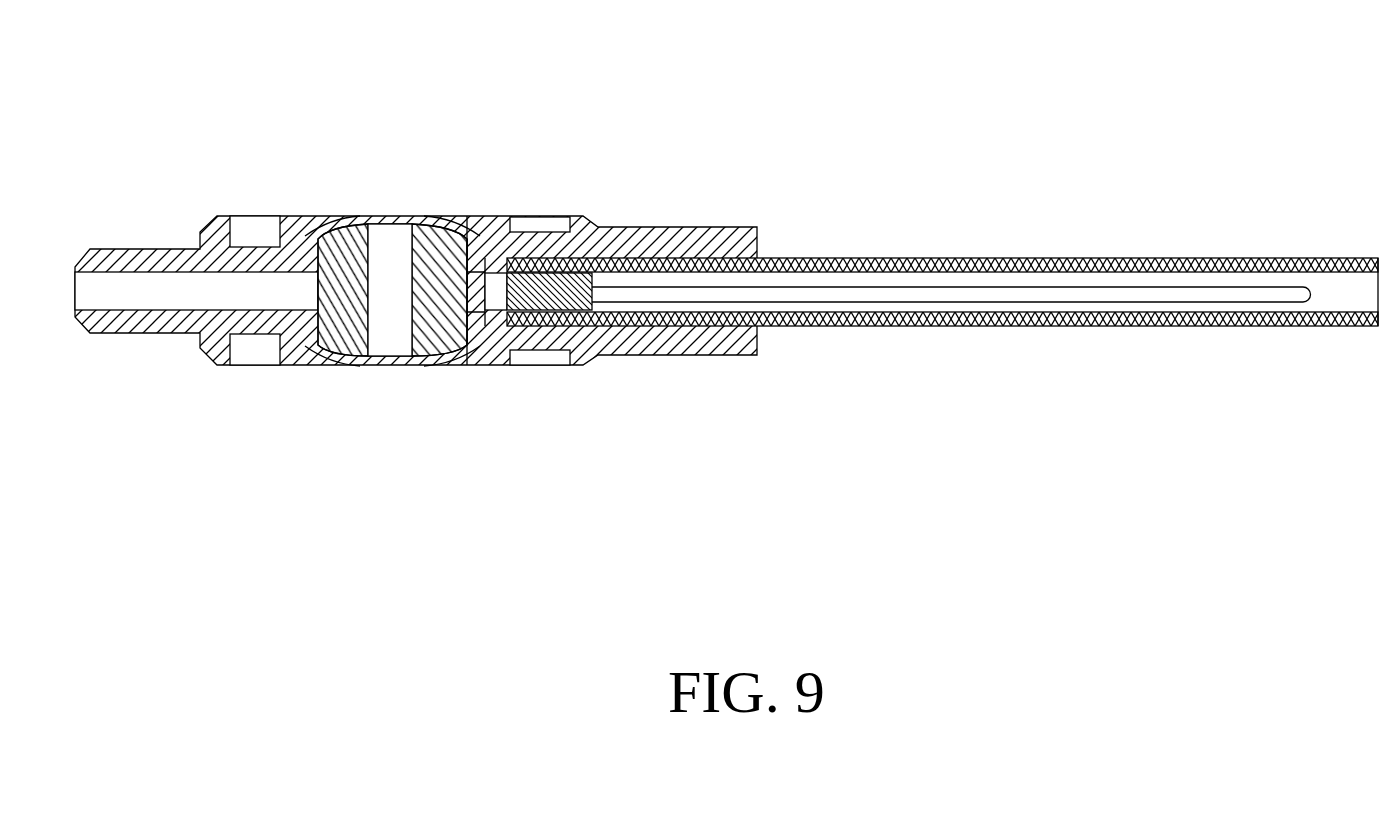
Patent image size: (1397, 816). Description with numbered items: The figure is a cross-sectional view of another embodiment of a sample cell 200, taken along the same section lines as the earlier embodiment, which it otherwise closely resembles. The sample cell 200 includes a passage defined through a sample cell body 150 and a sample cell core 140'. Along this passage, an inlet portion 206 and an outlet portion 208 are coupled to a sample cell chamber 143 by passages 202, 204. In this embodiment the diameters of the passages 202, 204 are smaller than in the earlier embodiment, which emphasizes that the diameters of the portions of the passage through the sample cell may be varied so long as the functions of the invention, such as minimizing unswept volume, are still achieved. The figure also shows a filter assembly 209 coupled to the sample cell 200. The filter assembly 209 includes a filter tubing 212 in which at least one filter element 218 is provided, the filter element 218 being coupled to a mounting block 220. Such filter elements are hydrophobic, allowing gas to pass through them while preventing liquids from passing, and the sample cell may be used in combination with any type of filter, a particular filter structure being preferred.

The sample cell 200 is at (187, 141).
The filter assembly 209 is at (942, 234).
The sample cell chamber 143 is at (393, 274).
The passage 202 is at (444, 265).
The inlet portion 206 is at (498, 291).
The filter tubing 212 is at (952, 258).
The outlet portion 208 is at (140, 295).
The passage 204 is at (369, 356).
The sample cell core 140' is at (480, 352).
The mounting block 220 is at (562, 320).
The sample cell body 150 is at (700, 357).
The filter element 218 is at (1013, 302).